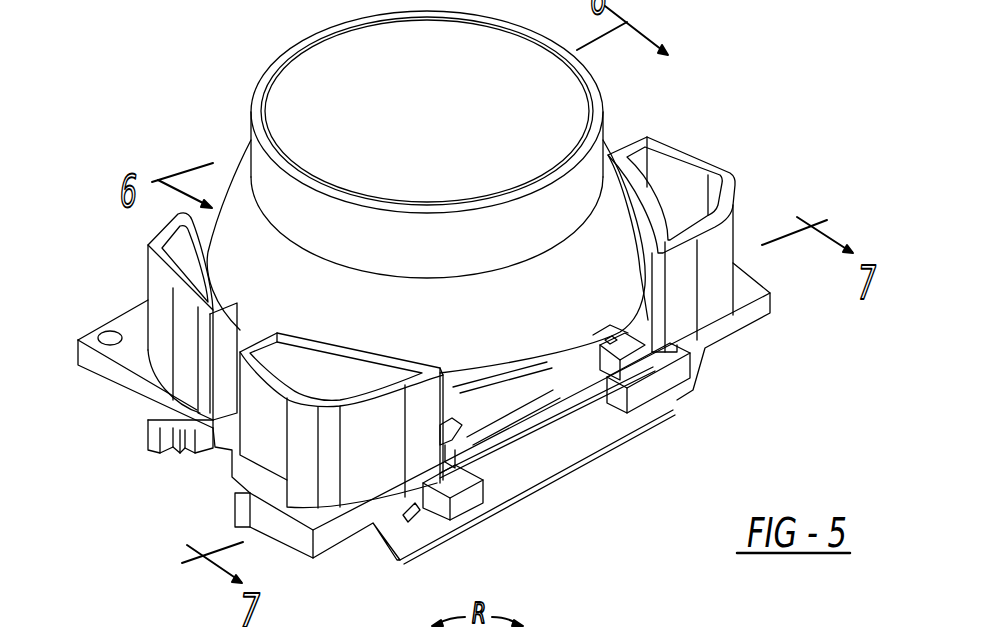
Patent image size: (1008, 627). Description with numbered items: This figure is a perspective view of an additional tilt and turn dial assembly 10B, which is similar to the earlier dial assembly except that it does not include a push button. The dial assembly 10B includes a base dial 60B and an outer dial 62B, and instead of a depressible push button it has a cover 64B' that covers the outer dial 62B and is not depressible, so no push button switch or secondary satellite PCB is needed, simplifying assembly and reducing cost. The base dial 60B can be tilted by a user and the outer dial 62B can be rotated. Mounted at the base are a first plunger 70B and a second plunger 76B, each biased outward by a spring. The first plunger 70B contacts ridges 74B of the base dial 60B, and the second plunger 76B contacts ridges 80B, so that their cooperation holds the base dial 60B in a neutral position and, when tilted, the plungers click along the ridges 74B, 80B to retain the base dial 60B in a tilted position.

The dial assembly 10B is at (450, 288).
The cover 64B' is at (406, 107).
The outer dial 62B is at (270, 177).
The base dial 60B is at (710, 282).
The second plunger 76B is at (593, 450).
The ridges 80B is at (577, 453).
The ridges 74B is at (447, 432).
The first plunger 70B is at (450, 435).